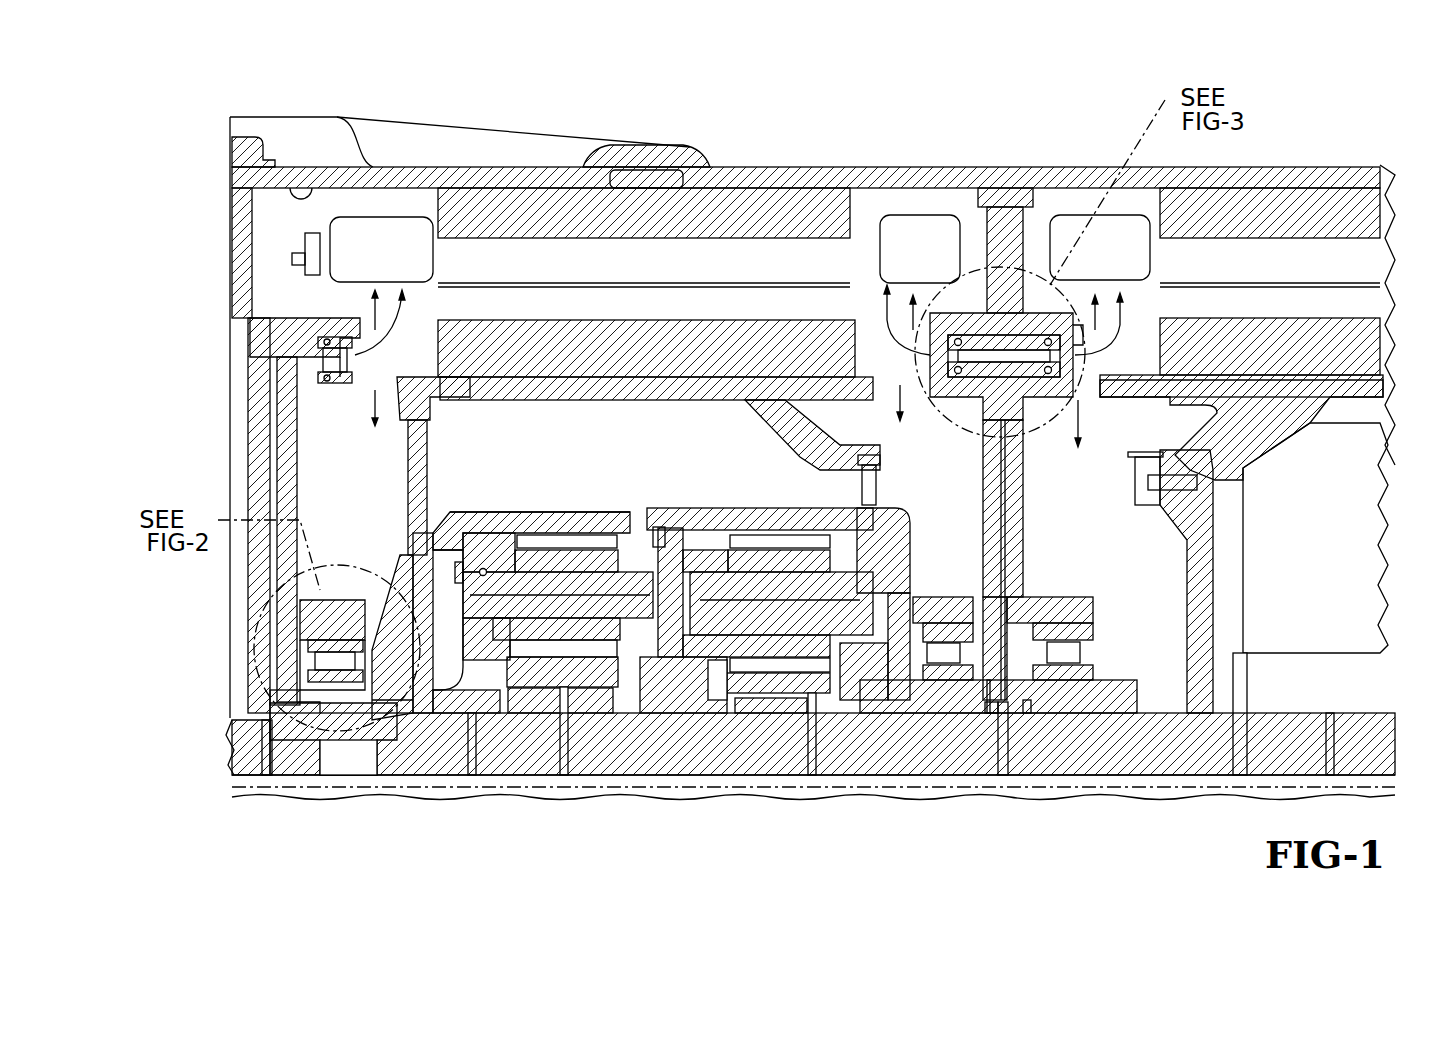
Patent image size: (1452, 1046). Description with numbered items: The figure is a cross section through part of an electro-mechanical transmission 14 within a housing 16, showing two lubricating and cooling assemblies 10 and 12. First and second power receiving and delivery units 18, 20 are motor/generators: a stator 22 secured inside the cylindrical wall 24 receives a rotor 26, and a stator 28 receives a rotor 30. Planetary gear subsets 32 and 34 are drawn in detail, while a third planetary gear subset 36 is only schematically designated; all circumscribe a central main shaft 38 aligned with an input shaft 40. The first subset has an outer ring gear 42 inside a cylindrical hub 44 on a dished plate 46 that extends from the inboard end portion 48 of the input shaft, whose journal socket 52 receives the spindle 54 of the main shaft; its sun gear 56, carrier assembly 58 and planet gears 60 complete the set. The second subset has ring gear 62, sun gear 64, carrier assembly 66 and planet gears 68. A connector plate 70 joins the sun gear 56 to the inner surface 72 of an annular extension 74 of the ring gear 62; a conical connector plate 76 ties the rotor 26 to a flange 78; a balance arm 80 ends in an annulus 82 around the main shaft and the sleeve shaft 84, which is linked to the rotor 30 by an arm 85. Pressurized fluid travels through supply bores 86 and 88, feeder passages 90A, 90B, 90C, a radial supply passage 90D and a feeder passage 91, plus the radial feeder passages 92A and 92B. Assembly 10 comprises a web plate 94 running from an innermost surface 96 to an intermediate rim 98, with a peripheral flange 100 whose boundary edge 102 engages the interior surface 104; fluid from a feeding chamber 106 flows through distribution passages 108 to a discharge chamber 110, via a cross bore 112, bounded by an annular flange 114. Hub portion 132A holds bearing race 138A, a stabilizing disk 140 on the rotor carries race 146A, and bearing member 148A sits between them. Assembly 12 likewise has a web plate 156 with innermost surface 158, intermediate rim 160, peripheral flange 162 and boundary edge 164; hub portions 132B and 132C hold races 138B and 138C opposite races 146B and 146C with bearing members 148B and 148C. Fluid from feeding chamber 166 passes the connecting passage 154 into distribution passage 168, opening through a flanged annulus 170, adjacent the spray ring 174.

The lubricating and cooling assembly 10 is at (232, 456).
The lubricating and cooling assembly 12 is at (1030, 512).
The electro-mechanical transmission 14 is at (858, 135).
The housing 16 is at (757, 160).
The first power receiving and delivery unit 18 is at (432, 258).
The second power receiving and delivery unit 20 is at (1392, 240).
The stator 22 is at (505, 210).
The cylindrical wall 24 is at (808, 168).
The rotor 26 is at (578, 355).
The stator 28 is at (1313, 210).
The rotor 30 is at (1333, 330).
The first planetary gear subset 32 is at (540, 505).
The second planetary gear subset 34 is at (757, 505).
The third planetary gear subset 36 is at (1303, 561).
The central main shaft 38 is at (855, 760).
The input shaft 40 is at (245, 760).
The outer gear member (ring gear) 42 is at (607, 525).
The cylindrical hub 44 is at (525, 520).
The dished plate 46 is at (410, 575).
The inboard end portion 48 is at (330, 730).
The journal socket 52 is at (375, 740).
The orienting and aligning spindle 54 is at (352, 760).
The inner gear member (sun gear) 56 is at (512, 700).
The carrier assembly 58 is at (455, 690).
The planet gears 60 is at (583, 565).
The outer ring gear 62 is at (720, 540).
The inner sun gear 64 is at (730, 680).
The carrier assembly 66 is at (690, 690).
The planet gears 68 is at (810, 558).
The connector plate 70 is at (660, 650).
The radially inner surface 72 is at (658, 530).
The annular extension 74 is at (680, 520).
The conical connector plate 76 is at (760, 420).
The flange 78 is at (868, 468).
The balance arm 80 is at (905, 528).
The annulus 82 is at (957, 695).
The sleeve shaft 84 is at (765, 705).
The arm 85 is at (1195, 570).
The supply bore 86 is at (615, 780).
The supply bore 88 is at (257, 785).
The feeder passage 90A is at (440, 750).
The feeder passage 90B is at (563, 745).
The feeder passage 90C is at (812, 745).
The radial supply passage 90D is at (1308, 700).
The radial feeder passage 91 is at (1243, 690).
The radial feeder passage 92A is at (262, 738).
The radial feeder passage 92B is at (1030, 735).
The web plate 94 is at (255, 435).
The annular innermost surface 96 is at (280, 710).
The intermediate rim 98 is at (283, 330).
The peripheral flange 100 is at (240, 215).
The boundary edge 102 is at (240, 185).
The cylindrical interior surface 104 is at (292, 188).
The annular feeding chamber 106 is at (280, 700).
The distribution passages 108 is at (277, 472).
The annular discharge chamber 110 is at (285, 362).
The cross bore 112 is at (278, 355).
The annular flange 114 is at (333, 385).
The hub portion 132A is at (345, 605).
The hub portion 132B is at (950, 605).
The hub portion 132C is at (1050, 605).
The bearing race 138A is at (325, 628).
The bearing race 138B is at (918, 630).
The bearing race 138C is at (1093, 640).
The stabilizing disk 140 is at (420, 452).
The bearing race 146A is at (330, 668).
The bearing race 146B is at (940, 665).
The bearing race 146C is at (1080, 655).
The bearing member 148A is at (330, 650).
The bearing member 148B is at (935, 650).
The bearing member 148C is at (1073, 640).
The connecting passage 154 is at (1030, 700).
The web plate 156 is at (1017, 482).
The radially innermost annular surface 158 is at (1088, 630).
The intermediate rim 160 is at (1060, 325).
The peripheral flange 162 is at (995, 250).
The boundary edge 164 is at (1003, 190).
The annular feeding chamber 166 is at (1003, 722).
The distribution passage 168 is at (1005, 535).
The flanged annulus 170 is at (1060, 415).
The spray ring 174 is at (950, 380).